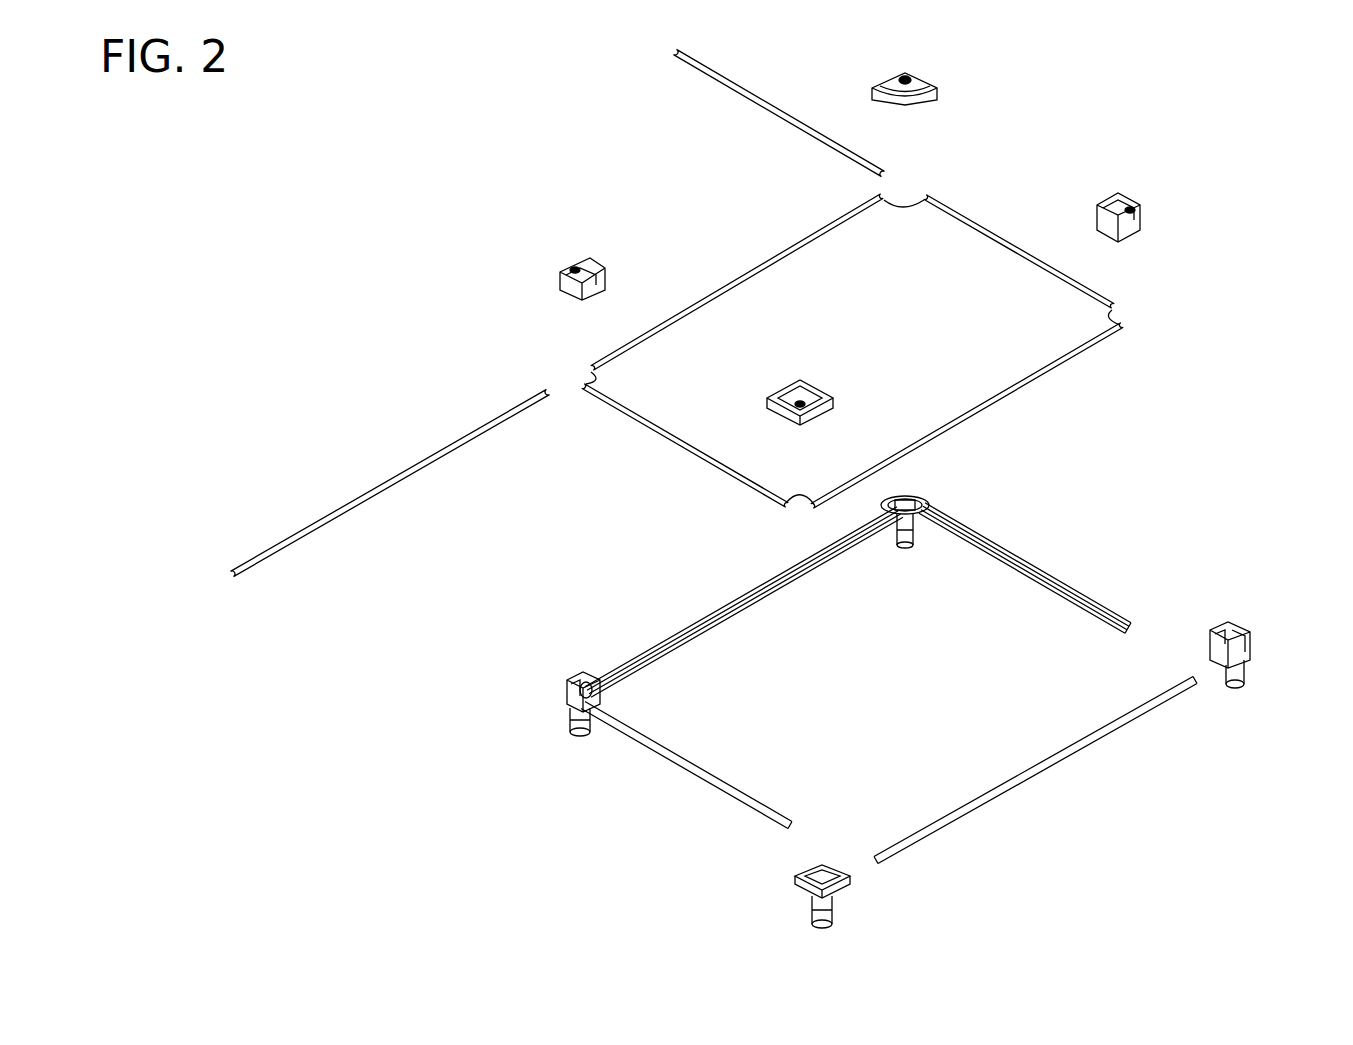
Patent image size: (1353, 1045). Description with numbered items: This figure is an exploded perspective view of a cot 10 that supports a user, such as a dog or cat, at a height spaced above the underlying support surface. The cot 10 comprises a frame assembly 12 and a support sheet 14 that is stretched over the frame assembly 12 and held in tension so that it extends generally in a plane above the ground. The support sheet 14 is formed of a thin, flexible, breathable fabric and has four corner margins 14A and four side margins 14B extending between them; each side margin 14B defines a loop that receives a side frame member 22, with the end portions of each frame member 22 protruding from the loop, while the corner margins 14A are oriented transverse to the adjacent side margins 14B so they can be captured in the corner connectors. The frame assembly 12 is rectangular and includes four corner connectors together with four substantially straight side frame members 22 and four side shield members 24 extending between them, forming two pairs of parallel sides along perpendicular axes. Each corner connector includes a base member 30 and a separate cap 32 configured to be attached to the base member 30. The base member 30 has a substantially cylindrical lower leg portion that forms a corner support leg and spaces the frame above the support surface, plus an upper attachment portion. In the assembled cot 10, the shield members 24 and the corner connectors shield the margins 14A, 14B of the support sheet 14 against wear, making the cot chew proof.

The cot 10 is at (328, 772).
The frame assembly 12 is at (700, 870).
The support sheet 14 is at (934, 353).
The corner margins 14A is at (905, 204).
The side margins 14B is at (760, 280).
The side frame members 22 is at (770, 103).
The side shield members 24 is at (720, 610).
The base member 30 is at (935, 498).
The cap 32 is at (933, 74).